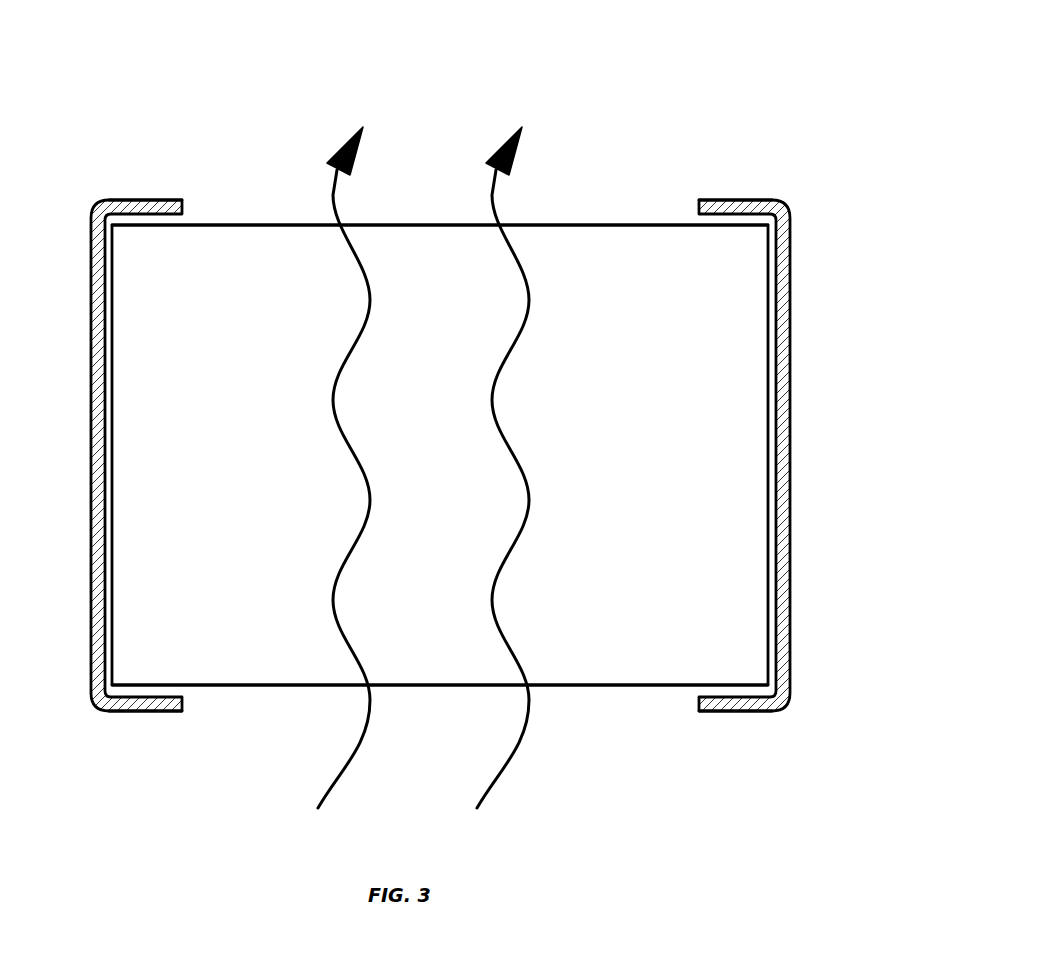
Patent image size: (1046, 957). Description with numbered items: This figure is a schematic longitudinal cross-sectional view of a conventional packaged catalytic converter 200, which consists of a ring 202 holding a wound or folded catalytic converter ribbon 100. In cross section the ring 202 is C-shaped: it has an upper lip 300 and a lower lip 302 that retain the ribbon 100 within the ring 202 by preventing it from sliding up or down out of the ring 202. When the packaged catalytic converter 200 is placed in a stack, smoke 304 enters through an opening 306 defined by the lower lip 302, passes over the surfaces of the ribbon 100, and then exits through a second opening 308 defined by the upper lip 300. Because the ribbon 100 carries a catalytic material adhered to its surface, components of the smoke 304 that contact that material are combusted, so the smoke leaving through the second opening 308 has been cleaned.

The packaged catalytic converter 200 is at (722, 88).
The catalytic converter ribbon 100 is at (412, 225).
The ring 202 is at (790, 298).
The upper lip 300 is at (135, 200).
The lower lip 302 is at (147, 711).
The smoke 304 is at (520, 465).
The opening 306 is at (583, 687).
The second opening 308 is at (603, 225).